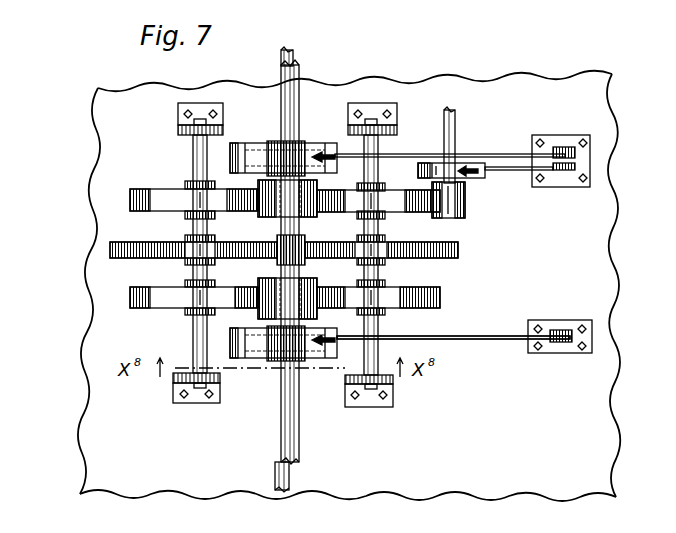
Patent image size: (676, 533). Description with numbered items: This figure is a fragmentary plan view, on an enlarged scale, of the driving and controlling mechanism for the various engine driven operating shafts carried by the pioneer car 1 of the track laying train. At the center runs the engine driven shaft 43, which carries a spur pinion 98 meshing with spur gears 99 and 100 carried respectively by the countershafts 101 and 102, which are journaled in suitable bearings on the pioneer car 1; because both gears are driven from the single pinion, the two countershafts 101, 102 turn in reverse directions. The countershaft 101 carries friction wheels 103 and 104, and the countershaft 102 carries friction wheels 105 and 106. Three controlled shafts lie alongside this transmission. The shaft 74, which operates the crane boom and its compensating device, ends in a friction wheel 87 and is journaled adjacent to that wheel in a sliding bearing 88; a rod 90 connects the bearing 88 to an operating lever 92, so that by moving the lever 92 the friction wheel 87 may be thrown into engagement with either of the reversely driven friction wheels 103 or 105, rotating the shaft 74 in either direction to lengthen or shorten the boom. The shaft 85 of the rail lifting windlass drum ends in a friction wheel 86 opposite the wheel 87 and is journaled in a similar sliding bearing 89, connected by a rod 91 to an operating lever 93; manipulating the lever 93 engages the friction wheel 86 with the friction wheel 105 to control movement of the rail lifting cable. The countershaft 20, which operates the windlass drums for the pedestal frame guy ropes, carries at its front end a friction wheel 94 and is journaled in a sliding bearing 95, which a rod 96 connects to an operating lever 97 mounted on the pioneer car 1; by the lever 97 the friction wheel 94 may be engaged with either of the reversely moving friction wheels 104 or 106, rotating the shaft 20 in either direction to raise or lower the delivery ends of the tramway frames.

The pioneer car 1 is at (100, 138).
The countershaft 20 is at (291, 479).
The engine driven shaft 43 is at (300, 98).
The shaft 74 is at (295, 52).
The shaft 85 is at (452, 122).
The friction wheel 86 is at (465, 213).
The friction wheel 87 is at (272, 190).
The sliding bearing 88 is at (315, 155).
The sliding bearing 89 is at (470, 179).
The rod 90 is at (482, 154).
The rod 91 is at (513, 167).
The operating lever 92 is at (562, 147).
The operating lever 93 is at (565, 171).
The friction wheel 94 is at (275, 292).
The sliding bearing 95 is at (230, 341).
The rod 96 is at (478, 336).
The operating lever 97 is at (560, 330).
The spur pinion 98 is at (285, 248).
The spur gear 99 is at (110, 248).
The spur gear 100 is at (458, 256).
The countershaft 101 is at (193, 149).
The countershaft 102 is at (375, 346).
The friction wheel 103 is at (150, 194).
The friction wheel 104 is at (140, 296).
The friction wheel 105 is at (405, 200).
The friction wheel 106 is at (430, 293).